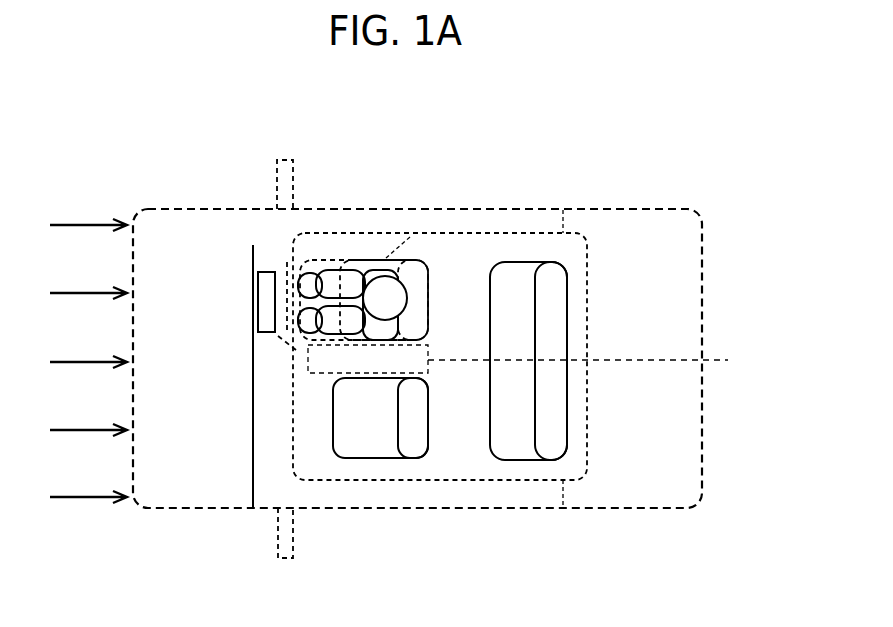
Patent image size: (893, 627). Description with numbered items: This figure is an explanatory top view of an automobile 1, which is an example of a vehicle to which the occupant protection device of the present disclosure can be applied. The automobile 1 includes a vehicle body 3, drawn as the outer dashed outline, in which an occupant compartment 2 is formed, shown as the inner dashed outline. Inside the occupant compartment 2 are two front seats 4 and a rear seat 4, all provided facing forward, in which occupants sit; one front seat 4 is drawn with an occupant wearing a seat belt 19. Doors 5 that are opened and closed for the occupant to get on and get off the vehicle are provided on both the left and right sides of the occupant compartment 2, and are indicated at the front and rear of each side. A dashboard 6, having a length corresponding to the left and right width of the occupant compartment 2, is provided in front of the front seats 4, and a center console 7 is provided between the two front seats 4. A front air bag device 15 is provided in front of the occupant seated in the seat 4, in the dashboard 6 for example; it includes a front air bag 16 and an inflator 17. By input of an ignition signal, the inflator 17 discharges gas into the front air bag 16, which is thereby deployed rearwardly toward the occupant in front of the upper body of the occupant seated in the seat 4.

The automobile 1 is at (417, 302).
The occupant compartment 2 is at (467, 243).
The vehicle body 3 is at (178, 228).
The seat 4 is at (419, 262).
The door 5 is at (325, 222).
The dashboard 6 is at (273, 440).
The center console 7 is at (527, 359).
The front air bag device 15 is at (248, 228).
The front air bag 16 is at (287, 262).
The inflator 17 is at (258, 272).
The seat belt 19 is at (392, 255).